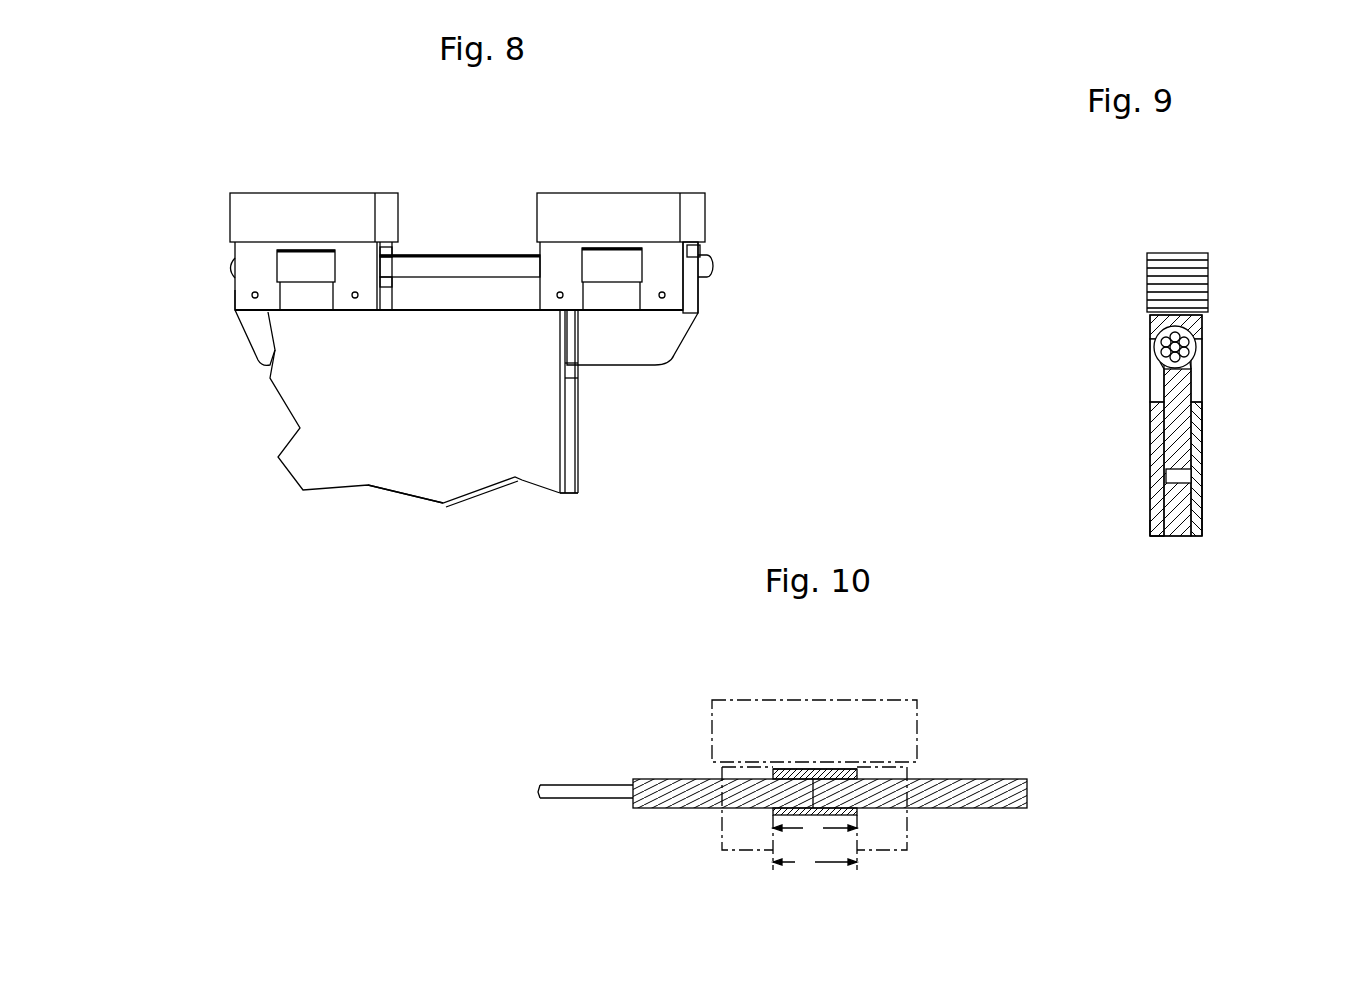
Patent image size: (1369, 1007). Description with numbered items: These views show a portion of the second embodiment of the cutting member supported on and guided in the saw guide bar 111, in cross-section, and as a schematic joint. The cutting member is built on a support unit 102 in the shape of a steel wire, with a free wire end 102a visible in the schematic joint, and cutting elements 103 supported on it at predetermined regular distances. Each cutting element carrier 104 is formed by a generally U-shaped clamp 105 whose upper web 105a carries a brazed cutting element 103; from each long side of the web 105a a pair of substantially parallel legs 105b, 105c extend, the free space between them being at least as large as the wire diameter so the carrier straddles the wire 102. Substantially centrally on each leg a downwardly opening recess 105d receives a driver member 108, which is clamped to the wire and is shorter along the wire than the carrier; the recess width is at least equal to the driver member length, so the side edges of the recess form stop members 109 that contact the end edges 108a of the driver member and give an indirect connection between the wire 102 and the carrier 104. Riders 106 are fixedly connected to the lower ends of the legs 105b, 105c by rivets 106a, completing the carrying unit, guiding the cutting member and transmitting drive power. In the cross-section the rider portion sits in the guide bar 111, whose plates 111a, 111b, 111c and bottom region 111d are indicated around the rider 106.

In FIG. 8, the support unit 102 is at (462, 258).
In FIG. 9, the support unit 102 is at (1204, 340).
In FIG. 10, the support unit 102 is at (1018, 779).
In FIG. 10, the wire rope end 102a is at (550, 795).
In FIG. 8, the cutting element 103 is at (632, 193).
In FIG. 9, the cutting element 103 is at (1195, 267).
In FIG. 10, the cutting element 103 is at (917, 700).
In FIG. 8, the cutting element carrier 104 is at (704, 240).
In FIG. 8, the clamp 105 is at (258, 267).
In FIG. 10, the clamp 105 is at (907, 812).
In FIG. 9, the upper web 105a is at (1209, 299).
In FIG. 8, the leg 105b is at (242, 300).
In FIG. 9, the leg 105b is at (1157, 370).
In FIG. 8, the leg 105c is at (702, 297).
In FIG. 9, the leg 105c is at (1200, 392).
In FIG. 8, the recess 105d is at (605, 297).
In FIG. 8, the rider 106 is at (653, 333).
In FIG. 9, the rider 106 is at (1204, 445).
In FIG. 8, the rivet 106a is at (665, 296).
In FIG. 8, the driver member 108 is at (297, 256).
In FIG. 9, the driver member 108 is at (1157, 344).
In FIG. 10, the driver member 108 is at (820, 768).
In FIG. 10, the end edge 108a is at (770, 769).
In FIG. 8, the stop member 109 is at (268, 312).
In FIG. 10, the stop member 109 is at (857, 842).
In FIG. 8, the guide bar 111 is at (297, 398).
In FIG. 8, the sheet web 111a is at (576, 372).
In FIG. 9, the sheet web 111a is at (1182, 481).
In FIG. 8, the sheet lower edge 111b is at (395, 478).
In FIG. 9, the sheet lower edge 111b is at (1157, 490).
In FIG. 8, the sheet inner web 111c is at (578, 463).
In FIG. 9, the sheet inner web 111c is at (1204, 527).
In FIG. 8, the sheet bottom end 111d is at (567, 493).
In FIG. 9, the sheet bottom end 111d is at (1155, 538).